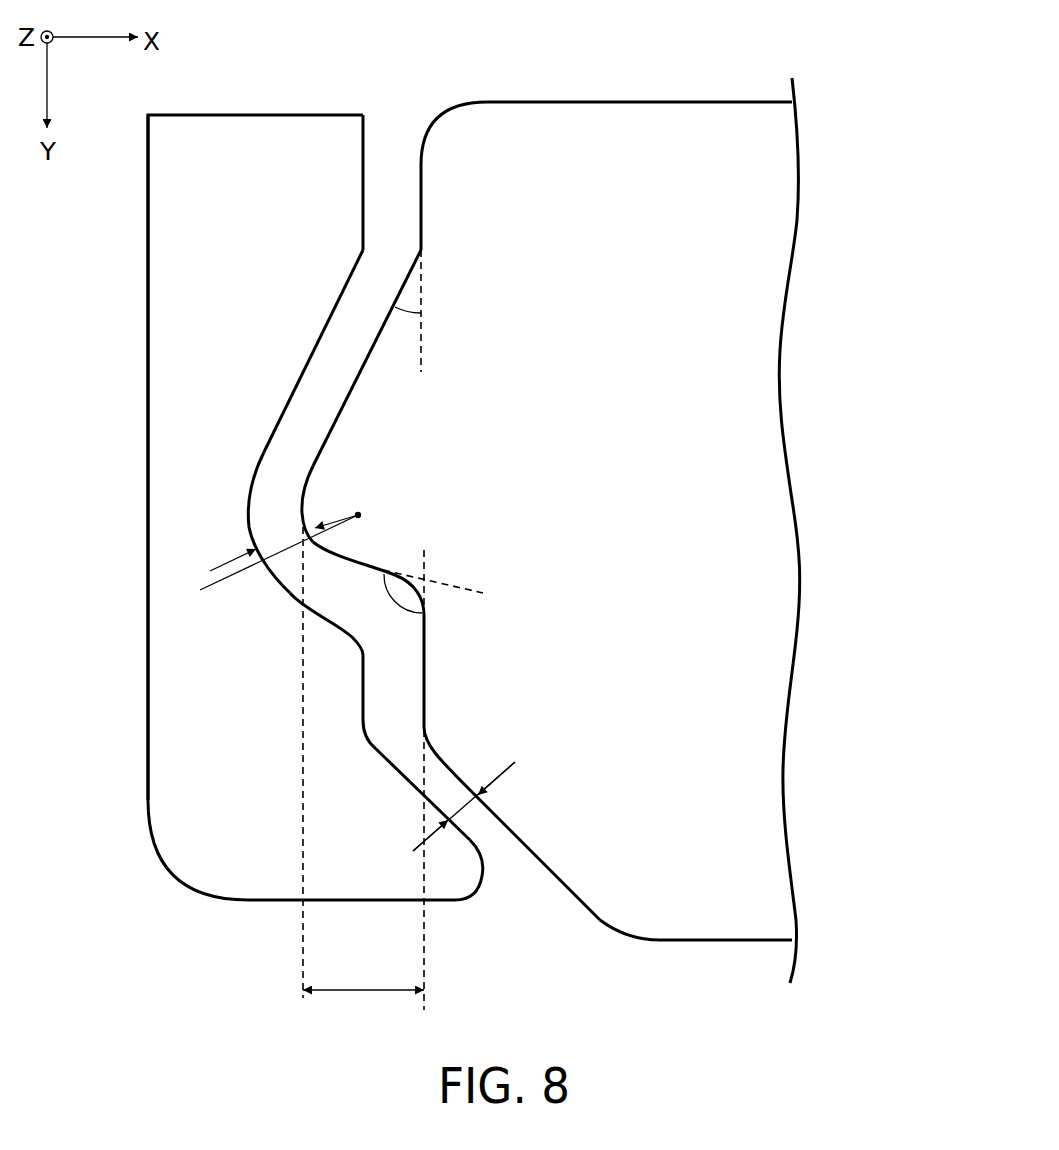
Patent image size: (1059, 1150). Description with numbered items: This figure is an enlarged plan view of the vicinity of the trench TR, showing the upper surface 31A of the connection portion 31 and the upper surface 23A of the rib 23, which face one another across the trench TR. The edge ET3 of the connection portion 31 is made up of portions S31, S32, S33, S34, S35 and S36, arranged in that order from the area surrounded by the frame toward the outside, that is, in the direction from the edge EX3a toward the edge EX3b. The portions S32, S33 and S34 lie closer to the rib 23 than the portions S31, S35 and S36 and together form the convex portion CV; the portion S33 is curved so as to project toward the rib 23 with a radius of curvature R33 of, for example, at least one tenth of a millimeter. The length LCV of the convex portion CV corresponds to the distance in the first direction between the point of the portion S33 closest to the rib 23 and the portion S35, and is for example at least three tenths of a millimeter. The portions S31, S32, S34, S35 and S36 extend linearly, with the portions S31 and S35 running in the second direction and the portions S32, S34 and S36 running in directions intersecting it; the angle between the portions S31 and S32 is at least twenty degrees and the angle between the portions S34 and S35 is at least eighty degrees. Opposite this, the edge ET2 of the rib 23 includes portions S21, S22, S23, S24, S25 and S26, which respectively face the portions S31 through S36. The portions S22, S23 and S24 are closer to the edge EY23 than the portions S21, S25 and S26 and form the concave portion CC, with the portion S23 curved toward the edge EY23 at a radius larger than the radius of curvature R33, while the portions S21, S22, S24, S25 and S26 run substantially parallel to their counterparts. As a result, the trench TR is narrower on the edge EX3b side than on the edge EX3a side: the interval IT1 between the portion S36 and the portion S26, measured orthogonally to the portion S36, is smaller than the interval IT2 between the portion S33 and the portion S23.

The rib 23 is at (251, 507).
The upper surface of the rib 23A is at (188, 326).
The edge of the rib EY23 is at (145, 413).
The portion of the edge ET2 S21 is at (367, 204).
The portion of the edge ET2 S22 is at (330, 330).
The portion of the edge ET2 S23 is at (253, 514).
The portion of the edge ET2 S24 is at (344, 616).
The portion of the edge ET2 S25 is at (366, 692).
The portion of the edge ET2 S26 is at (397, 768).
The connection portion 31 is at (595, 531).
The upper surface of the connection portion 31A is at (762, 290).
The portion of the edge ET3 S31 is at (418, 204).
The portion of the edge ET3 S32 is at (337, 417).
The portion of the edge ET3 S33 is at (293, 494).
The portion of the edge ET3 S34 is at (351, 569).
The portion of the edge ET3 S35 is at (419, 686).
The portion of the edge ET3 S36 is at (513, 841).
The edge EX3a is at (707, 100).
The edge EX3b is at (731, 945).
The trench TR is at (398, 151).
The edge of the rib ET2 is at (363, 136).
The edge of the connection portion ET3 is at (421, 165).
The convex portion CV is at (385, 475).
The radius of curvature of the portion S33 R33 is at (350, 517).
The length of the convex portion CV LCV is at (363, 768).
The interval between the portion S36 and the rib IT1 is at (462, 803).
The interval between the portion S33 and the rib IT2 is at (259, 563).
The concave portion CC is at (214, 515).